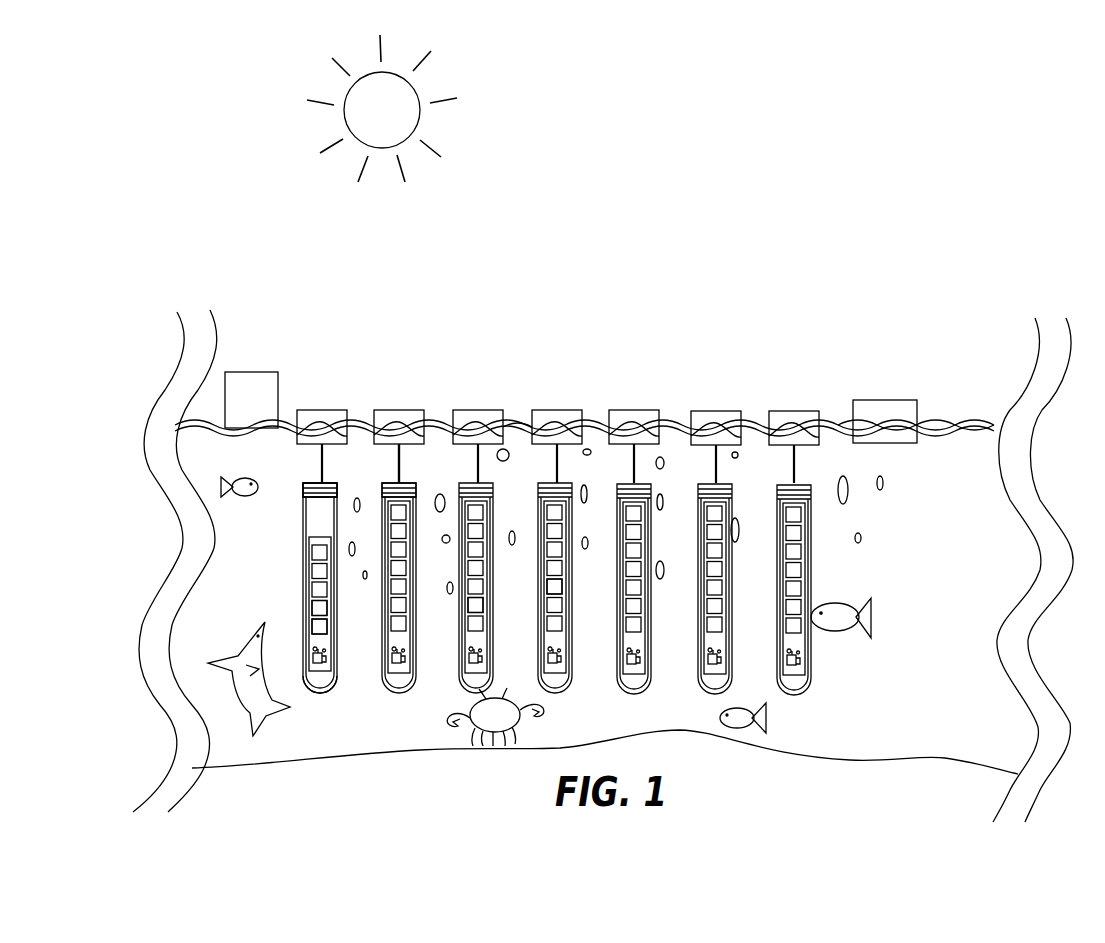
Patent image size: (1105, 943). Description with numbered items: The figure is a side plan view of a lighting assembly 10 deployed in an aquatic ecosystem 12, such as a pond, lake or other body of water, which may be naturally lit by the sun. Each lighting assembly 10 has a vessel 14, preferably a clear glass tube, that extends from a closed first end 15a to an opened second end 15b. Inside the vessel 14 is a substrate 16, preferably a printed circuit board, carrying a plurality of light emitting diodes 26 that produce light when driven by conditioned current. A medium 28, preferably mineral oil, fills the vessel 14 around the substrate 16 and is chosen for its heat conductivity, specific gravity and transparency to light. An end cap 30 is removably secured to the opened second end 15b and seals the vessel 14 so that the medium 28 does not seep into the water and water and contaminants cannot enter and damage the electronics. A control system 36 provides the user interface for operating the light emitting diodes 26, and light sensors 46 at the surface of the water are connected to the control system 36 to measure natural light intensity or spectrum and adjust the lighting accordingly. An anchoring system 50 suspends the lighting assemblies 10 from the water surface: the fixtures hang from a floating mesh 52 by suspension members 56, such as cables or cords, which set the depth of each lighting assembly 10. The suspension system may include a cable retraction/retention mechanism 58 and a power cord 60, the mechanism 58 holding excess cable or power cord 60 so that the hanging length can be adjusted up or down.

The lighting assembly 10 is at (584, 502).
The ecosystem 12 is at (930, 188).
The vessel 14 is at (292, 563).
The closed first end 15a is at (333, 680).
The opened second end 15b is at (303, 485).
The substrate 16 is at (328, 598).
The light emitting diodes 26 is at (330, 628).
The medium 28 is at (383, 548).
The end cap 30 is at (336, 487).
The control system 36 is at (281, 380).
The light sensors 46 is at (882, 400).
The anchoring system 50 is at (616, 378).
The floating mesh 52 is at (517, 418).
The suspension member 56 is at (396, 462).
The cable retraction/retention mechanism 58 is at (948, 432).
The power cord 60 is at (930, 420).